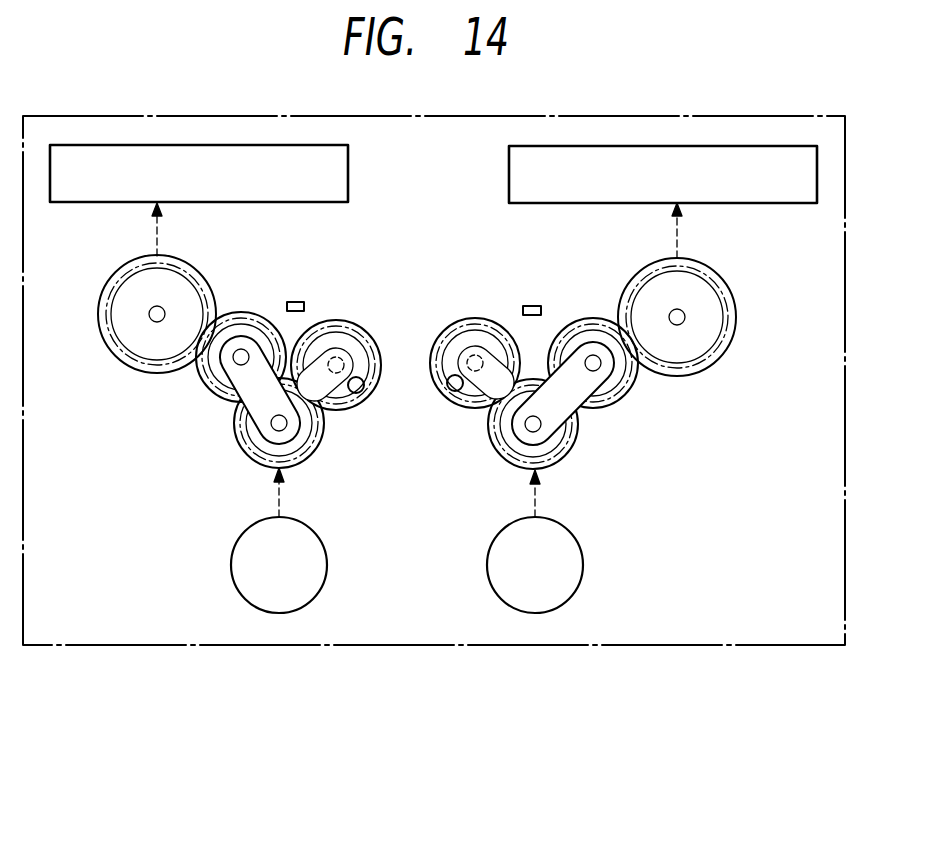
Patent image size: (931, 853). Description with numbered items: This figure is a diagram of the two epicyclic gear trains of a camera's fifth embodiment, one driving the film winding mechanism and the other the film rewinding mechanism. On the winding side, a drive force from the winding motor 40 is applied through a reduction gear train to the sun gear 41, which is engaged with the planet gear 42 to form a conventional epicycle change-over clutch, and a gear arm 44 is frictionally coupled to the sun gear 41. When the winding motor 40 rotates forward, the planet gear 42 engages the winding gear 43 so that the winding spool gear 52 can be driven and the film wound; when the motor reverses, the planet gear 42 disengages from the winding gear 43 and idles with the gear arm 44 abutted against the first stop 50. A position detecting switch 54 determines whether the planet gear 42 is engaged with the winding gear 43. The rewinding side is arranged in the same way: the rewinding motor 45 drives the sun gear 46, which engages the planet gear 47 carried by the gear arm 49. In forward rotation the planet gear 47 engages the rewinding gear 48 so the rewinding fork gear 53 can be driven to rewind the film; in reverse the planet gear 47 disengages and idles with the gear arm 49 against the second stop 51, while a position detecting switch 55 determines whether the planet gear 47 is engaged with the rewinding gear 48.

The winding motor 40 is at (318, 566).
The sun gear 41 is at (258, 444).
The planet gear 42 is at (216, 372).
The winding gear 43 is at (140, 356).
The gear arm 44 is at (258, 340).
The rewinding motor 45 is at (492, 552).
The sun gear 46 is at (560, 442).
The planet gear 47 is at (628, 380).
The rewinding gear 48 is at (702, 356).
The gear arm 49 is at (596, 390).
The first stop 50 is at (360, 392).
The second stop 51 is at (445, 378).
The winding spool gear 52 is at (352, 196).
The rewinding fork gear 53 is at (507, 181).
The position detecting switch 54 is at (300, 300).
The position detecting switch 55 is at (534, 302).